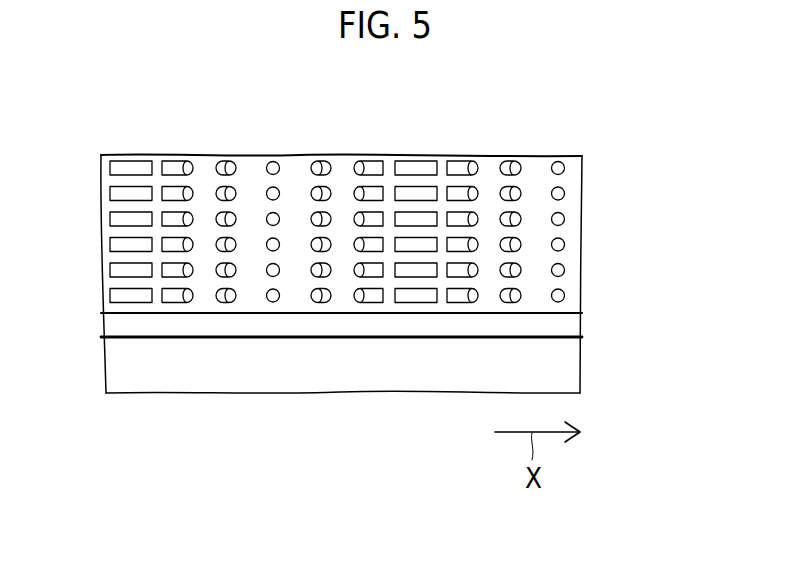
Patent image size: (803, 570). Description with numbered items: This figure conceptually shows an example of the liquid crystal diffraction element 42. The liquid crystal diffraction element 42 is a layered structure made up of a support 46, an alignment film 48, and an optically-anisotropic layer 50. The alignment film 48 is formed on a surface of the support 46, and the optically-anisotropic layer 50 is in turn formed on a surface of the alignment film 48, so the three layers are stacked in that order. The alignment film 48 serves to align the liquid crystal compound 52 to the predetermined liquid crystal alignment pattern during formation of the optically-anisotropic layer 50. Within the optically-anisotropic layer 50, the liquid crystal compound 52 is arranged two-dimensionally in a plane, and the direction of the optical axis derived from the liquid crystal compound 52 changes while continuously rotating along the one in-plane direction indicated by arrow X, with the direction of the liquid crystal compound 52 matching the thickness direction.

The liquid crystal diffraction element 42 is at (550, 126).
The support 46 is at (563, 365).
The alignment film 48 is at (563, 325).
The optically-anisotropic layer 50 is at (567, 208).
The liquid crystal compound 52 is at (234, 218).